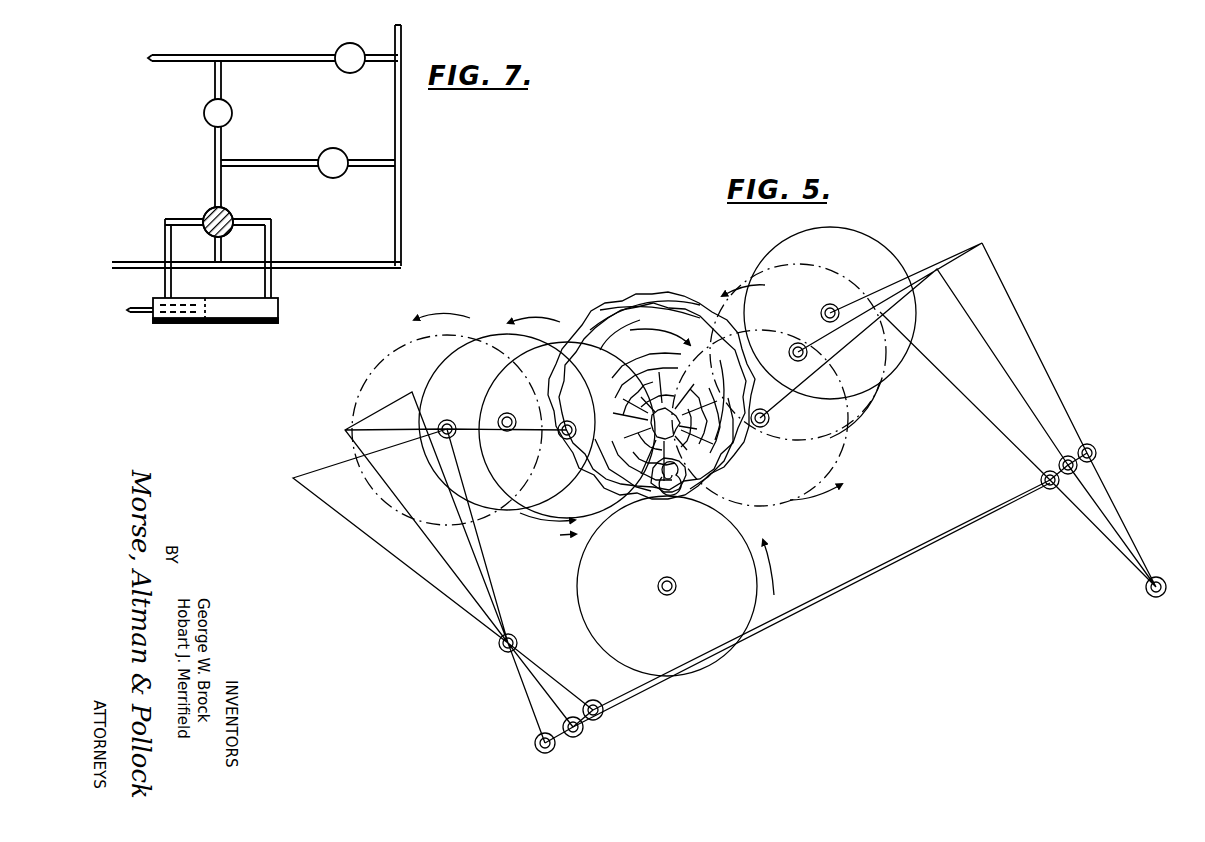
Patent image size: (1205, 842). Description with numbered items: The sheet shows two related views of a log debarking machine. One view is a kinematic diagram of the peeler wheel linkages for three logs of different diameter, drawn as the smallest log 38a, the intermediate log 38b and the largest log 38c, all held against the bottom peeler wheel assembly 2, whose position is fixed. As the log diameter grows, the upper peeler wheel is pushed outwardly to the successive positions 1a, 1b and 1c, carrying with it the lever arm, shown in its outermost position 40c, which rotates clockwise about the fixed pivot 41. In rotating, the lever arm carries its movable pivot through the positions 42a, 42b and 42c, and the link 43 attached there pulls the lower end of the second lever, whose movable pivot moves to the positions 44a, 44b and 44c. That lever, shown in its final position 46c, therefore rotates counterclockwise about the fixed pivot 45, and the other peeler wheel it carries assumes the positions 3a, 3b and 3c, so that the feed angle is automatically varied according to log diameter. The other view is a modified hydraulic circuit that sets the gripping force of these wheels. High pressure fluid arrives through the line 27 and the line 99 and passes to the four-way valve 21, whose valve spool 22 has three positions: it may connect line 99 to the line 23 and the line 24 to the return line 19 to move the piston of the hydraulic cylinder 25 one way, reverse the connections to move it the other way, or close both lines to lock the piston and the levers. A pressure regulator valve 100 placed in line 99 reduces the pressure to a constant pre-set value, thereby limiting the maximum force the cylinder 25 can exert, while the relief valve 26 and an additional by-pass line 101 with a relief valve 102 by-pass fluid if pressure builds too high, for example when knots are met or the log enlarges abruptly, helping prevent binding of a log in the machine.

In FIG. 7, the line 27 is at (195, 55).
In FIG. 7, the relief valve 26 is at (356, 44).
In FIG. 7, the return line 19 is at (401, 137).
In FIG. 7, the pressure regulator valve 100 is at (232, 113).
In FIG. 7, the high pressure line 99 is at (215, 149).
In FIG. 7, the by-pass line 101 is at (386, 163).
In FIG. 7, the relief valve 102 is at (330, 178).
In FIG. 7, the line 23 is at (192, 222).
In FIG. 7, the four-way valve 21 is at (230, 212).
In FIG. 7, the valve spool 22 is at (212, 233).
In FIG. 7, the line 24 is at (268, 232).
In FIG. 7, the hydraulic cylinder 25 is at (205, 325).
In FIG. 5, the lever position 46c is at (400, 560).
In FIG. 5, the fixed pivot 45 is at (500, 648).
In FIG. 5, the movable pivot position 44a is at (535, 749).
In FIG. 5, the movable pivot position 44b is at (580, 735).
In FIG. 5, the movable pivot position 44c is at (594, 700).
In FIG. 5, the peeler wheel position 3c is at (450, 420).
In FIG. 5, the peeler wheel position 3b is at (511, 413).
In FIG. 5, the peeler wheel position 3a is at (567, 440).
In FIG. 5, the peeler wheel position 1c is at (834, 303).
In FIG. 5, the peeler wheel position 1b is at (808, 357).
In FIG. 5, the peeler wheel position 1a is at (770, 416).
In FIG. 5, the lever arm position 40c is at (1025, 330).
In FIG. 5, the movable pivot position 42a is at (1054, 492).
In FIG. 5, the movable pivot position 42b is at (1075, 471).
In FIG. 5, the movable pivot position 42c is at (1094, 448).
In FIG. 5, the fixed pivot 41 is at (1167, 589).
In FIG. 5, the link 43 is at (882, 556).
In FIG. 5, the bottom peeler wheel assembly 2 is at (605, 570).
In FIG. 5, the log 38c is at (648, 300).
In FIG. 5, the log 38b is at (688, 385).
In FIG. 5, the log 38a is at (676, 495).